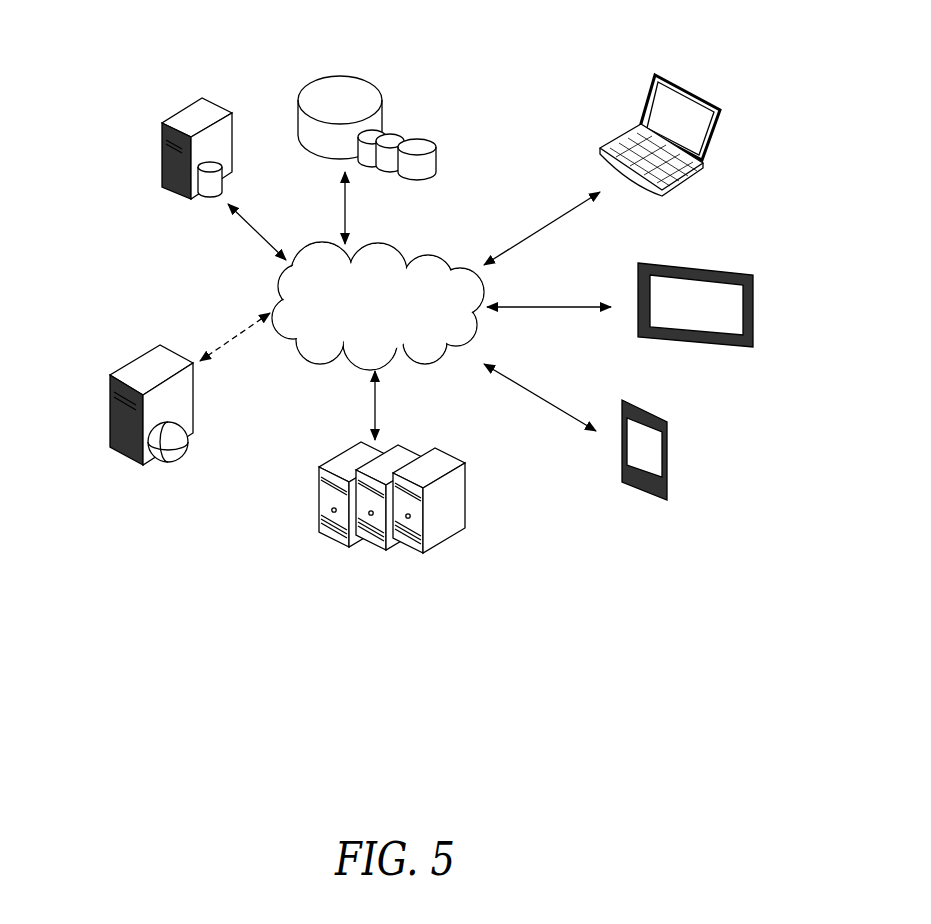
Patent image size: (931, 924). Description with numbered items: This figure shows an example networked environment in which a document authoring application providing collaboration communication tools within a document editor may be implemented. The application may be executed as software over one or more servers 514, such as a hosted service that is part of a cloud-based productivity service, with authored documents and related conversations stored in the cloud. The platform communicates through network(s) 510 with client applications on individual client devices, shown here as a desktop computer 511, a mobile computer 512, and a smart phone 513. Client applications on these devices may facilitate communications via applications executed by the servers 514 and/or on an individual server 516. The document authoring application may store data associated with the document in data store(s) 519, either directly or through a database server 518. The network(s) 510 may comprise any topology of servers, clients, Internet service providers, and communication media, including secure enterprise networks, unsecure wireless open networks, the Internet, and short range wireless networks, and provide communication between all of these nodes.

The network(s) 510 is at (381, 236).
The desktop computer 511 is at (696, 72).
The mobile computer 512 is at (729, 246).
The smart phone 513 is at (673, 419).
The servers 514 is at (342, 446).
The individual server 516 is at (131, 354).
The database server 518 is at (195, 207).
The data store(s) 519 is at (355, 54).